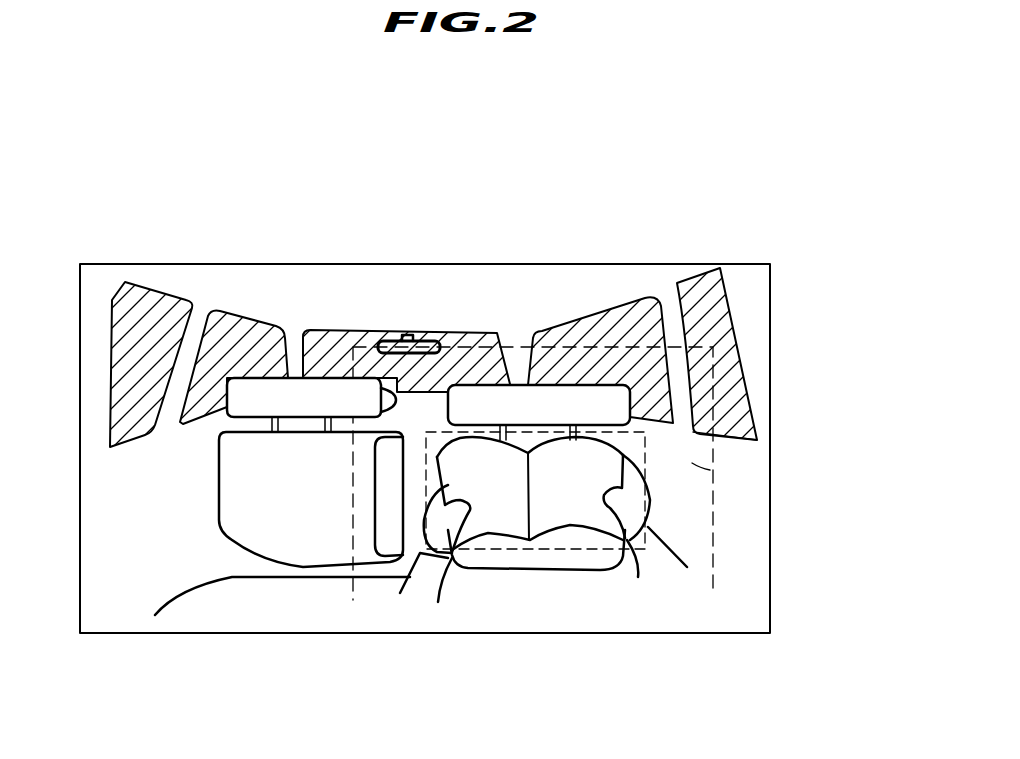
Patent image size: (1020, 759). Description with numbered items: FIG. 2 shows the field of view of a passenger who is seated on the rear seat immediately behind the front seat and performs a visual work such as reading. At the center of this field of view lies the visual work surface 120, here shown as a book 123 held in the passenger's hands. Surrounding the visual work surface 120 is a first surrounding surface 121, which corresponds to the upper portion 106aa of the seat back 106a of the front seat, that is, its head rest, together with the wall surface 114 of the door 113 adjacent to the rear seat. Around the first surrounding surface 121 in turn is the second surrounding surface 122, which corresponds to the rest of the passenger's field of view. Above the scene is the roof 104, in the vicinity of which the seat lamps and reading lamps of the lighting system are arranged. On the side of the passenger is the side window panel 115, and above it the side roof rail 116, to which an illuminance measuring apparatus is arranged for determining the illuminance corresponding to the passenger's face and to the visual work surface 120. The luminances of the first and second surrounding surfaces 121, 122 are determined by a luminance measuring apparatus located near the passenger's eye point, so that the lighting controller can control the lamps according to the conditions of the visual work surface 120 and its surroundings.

The roof 104 is at (429, 286).
The upper portion of seat back 106aa is at (288, 387).
The seat back 106a is at (313, 542).
The side roof rail 116 is at (672, 278).
The side window panel 115 is at (727, 346).
The door 113 is at (737, 448).
The wall surface of door 114 is at (692, 463).
The second surrounding surface 122 is at (742, 491).
The first surrounding surface 121 is at (677, 501).
The book 123 is at (557, 513).
The visual work surface 120 is at (584, 535).